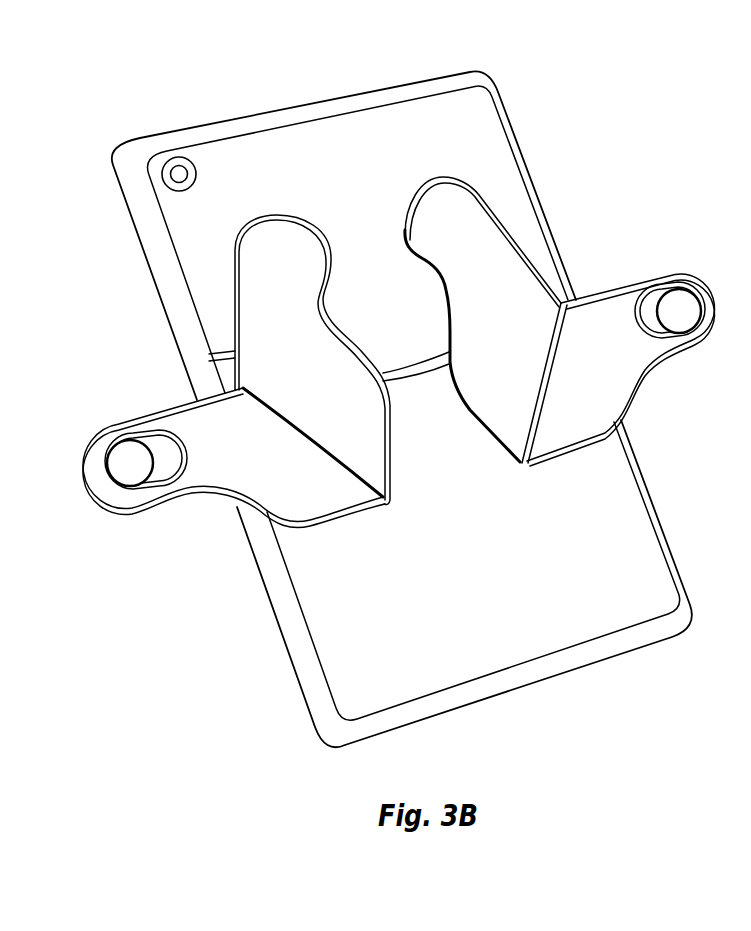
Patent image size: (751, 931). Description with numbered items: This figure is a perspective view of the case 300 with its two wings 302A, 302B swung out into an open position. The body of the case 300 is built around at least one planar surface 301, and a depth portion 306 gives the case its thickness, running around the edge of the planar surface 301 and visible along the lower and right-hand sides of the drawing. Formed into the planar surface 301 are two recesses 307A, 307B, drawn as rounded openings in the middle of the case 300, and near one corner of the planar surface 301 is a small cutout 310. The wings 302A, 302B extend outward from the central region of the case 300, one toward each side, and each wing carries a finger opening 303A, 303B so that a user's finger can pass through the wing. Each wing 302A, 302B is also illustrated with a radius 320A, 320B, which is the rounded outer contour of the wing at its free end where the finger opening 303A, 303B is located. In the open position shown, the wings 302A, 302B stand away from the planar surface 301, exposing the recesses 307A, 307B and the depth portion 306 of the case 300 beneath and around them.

The case 300 is at (401, 398).
The planar surface 301 is at (381, 128).
The wing 302A is at (679, 312).
The wing 302B is at (130, 462).
The finger opening 303A is at (683, 276).
The finger opening 303B is at (121, 432).
The depth portion 306 is at (647, 634).
The recess 307A is at (490, 278).
The recess 307B is at (270, 283).
The cutout 310 is at (174, 170).
The radius 320A is at (637, 336).
The radius 320B is at (220, 497).